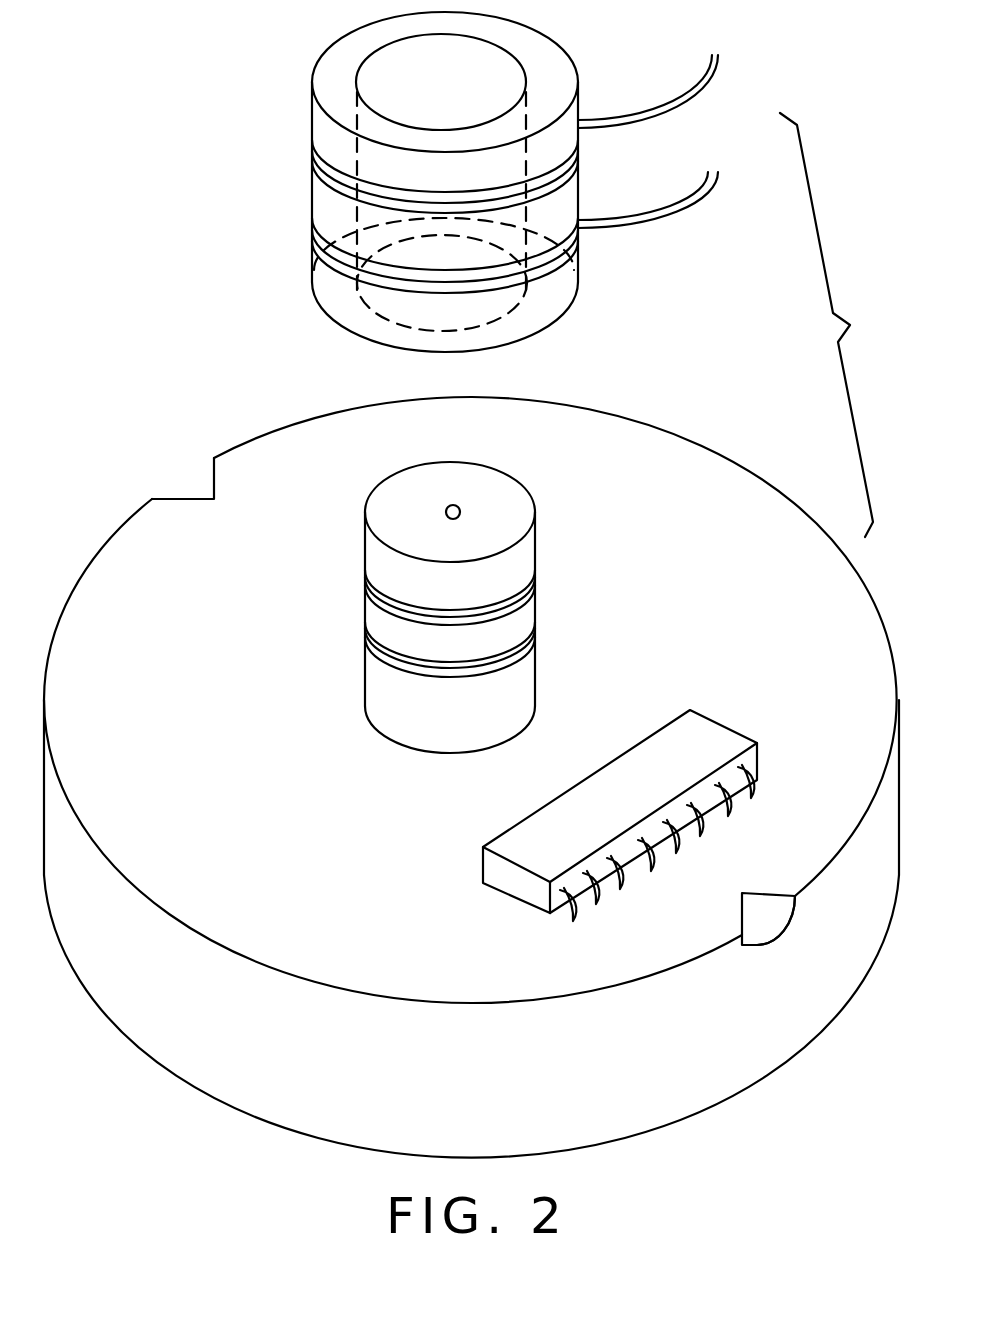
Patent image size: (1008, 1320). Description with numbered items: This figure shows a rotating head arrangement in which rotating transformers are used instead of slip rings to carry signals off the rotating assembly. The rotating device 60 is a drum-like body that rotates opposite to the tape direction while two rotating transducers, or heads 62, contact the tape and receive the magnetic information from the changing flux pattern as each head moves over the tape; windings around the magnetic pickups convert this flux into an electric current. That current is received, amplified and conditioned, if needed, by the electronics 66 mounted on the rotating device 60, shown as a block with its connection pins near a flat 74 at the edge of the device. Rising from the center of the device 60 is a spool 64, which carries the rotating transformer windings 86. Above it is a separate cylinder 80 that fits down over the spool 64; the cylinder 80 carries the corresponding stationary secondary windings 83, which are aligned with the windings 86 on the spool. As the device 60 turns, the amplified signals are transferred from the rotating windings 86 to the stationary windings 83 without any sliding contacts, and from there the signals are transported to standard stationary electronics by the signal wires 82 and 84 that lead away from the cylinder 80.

The rotating device 60 is at (744, 412).
The heads 62 is at (197, 467).
The spool 64 is at (479, 607).
The electronics 66 is at (592, 816).
The flat face 74 is at (772, 916).
The cylinder 80 is at (446, 182).
The signal wire 82 is at (716, 80).
The stationary secondary windings 83 is at (312, 217).
The signal wire 84 is at (712, 196).
The rotating transformer windings 86 is at (535, 577).